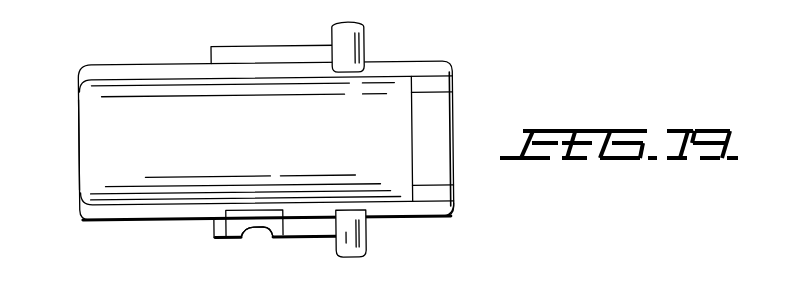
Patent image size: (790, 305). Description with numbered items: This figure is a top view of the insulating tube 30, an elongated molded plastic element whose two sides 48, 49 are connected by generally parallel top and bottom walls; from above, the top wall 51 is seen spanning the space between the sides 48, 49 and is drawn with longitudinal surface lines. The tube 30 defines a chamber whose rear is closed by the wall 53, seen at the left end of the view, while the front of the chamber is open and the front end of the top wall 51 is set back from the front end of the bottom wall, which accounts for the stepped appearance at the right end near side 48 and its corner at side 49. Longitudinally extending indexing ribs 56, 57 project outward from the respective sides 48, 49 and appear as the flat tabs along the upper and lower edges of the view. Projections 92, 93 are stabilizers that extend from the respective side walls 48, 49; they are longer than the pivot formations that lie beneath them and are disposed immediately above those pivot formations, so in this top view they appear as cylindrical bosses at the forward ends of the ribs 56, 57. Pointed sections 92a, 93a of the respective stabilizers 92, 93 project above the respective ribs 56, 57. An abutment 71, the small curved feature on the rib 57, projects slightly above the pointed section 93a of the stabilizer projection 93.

The insulating tube 30 is at (170, 57).
The side 48 is at (435, 58).
The side 49 is at (435, 218).
The top wall 51 is at (185, 187).
The wall 53 is at (78, 178).
The indexing rib 56 is at (279, 56).
The indexing rib 57 is at (308, 238).
The abutment 71 is at (262, 228).
The stabilizer projection 92 is at (360, 24).
The pointed section 92a is at (367, 44).
The stabilizer projection 93 is at (365, 245).
The pointed section 93a is at (367, 230).